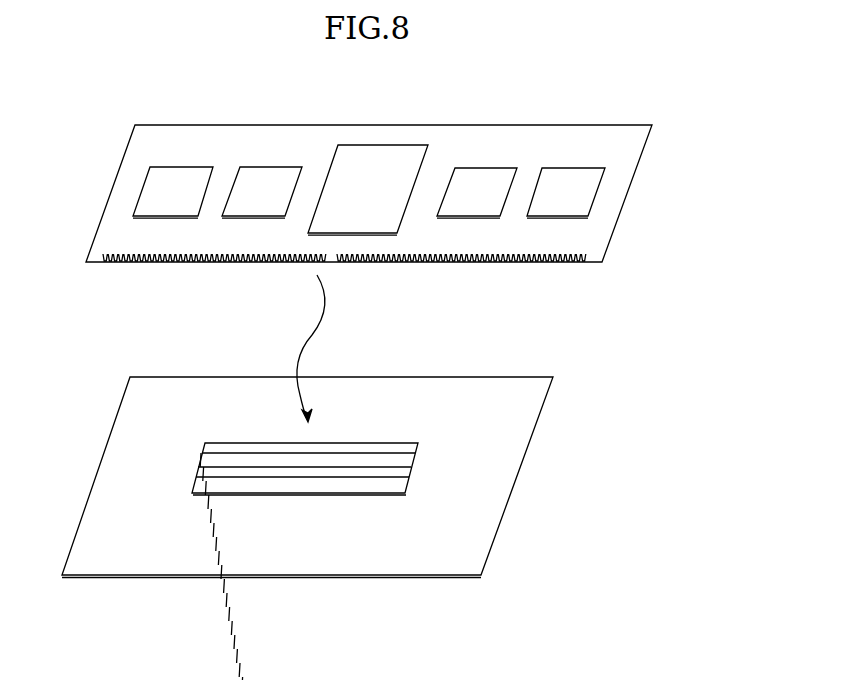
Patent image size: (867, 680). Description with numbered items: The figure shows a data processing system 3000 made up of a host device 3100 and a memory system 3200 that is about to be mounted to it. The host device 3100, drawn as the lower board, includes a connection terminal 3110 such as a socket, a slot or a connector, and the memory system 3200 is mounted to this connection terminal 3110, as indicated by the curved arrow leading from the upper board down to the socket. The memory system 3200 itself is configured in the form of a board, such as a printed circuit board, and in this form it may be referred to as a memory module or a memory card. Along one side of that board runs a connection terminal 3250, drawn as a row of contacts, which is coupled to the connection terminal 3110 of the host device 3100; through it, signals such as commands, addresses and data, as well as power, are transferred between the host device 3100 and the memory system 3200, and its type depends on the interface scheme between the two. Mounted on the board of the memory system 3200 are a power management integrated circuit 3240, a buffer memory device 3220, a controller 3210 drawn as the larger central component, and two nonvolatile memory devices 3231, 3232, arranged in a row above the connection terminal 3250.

The data processing system 3000 is at (229, 93).
The memory system 3200 is at (369, 193).
The connection terminal 3250 is at (119, 264).
The power management integrated circuit 3240 is at (173, 192).
The buffer memory device 3220 is at (262, 192).
The controller 3210 is at (368, 190).
The nonvolatile memory device 3231 is at (477, 193).
The nonvolatile memory device 3232 is at (566, 193).
The host device 3100 is at (307, 477).
The connection terminal 3110 is at (415, 460).